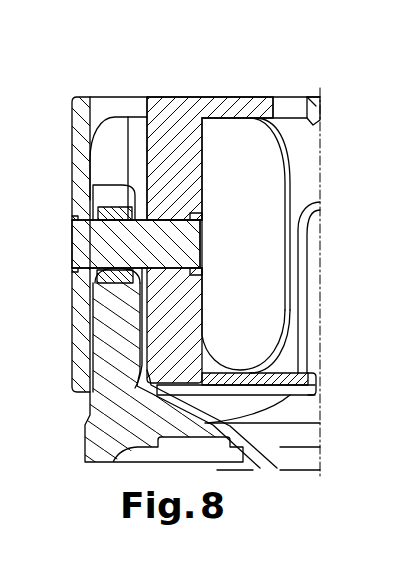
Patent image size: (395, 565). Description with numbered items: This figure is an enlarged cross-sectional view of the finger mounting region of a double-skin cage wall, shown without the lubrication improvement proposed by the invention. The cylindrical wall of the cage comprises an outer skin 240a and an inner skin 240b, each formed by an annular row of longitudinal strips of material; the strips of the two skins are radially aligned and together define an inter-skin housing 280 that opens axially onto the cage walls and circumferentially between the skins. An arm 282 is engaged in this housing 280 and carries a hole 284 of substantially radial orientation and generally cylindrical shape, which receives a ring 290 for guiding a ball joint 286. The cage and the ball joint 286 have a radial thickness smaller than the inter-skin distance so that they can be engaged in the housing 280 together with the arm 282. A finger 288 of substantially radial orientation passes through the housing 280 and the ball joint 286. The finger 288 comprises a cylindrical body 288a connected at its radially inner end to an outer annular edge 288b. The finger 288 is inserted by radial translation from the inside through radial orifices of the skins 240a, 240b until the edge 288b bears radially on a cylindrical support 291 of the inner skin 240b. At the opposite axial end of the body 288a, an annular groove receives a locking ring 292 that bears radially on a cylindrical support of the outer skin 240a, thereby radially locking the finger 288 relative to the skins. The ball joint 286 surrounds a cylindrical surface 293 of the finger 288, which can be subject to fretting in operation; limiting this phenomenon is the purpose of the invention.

The inter-skin housing 280 is at (117, 141).
The arm 282 is at (83, 192).
The hole 284 is at (78, 350).
The ball joint 286 is at (125, 207).
The finger 288 is at (84, 258).
The cylindrical body 288a is at (193, 292).
The outer annular edge 288b is at (197, 265).
The ring 290 is at (97, 298).
The cylindrical support 291 is at (197, 272).
The locking ring 292 is at (87, 250).
The cylindrical surface 293 is at (97, 300).
The outer skin 240a is at (80, 190).
The inner skin 240b is at (182, 168).